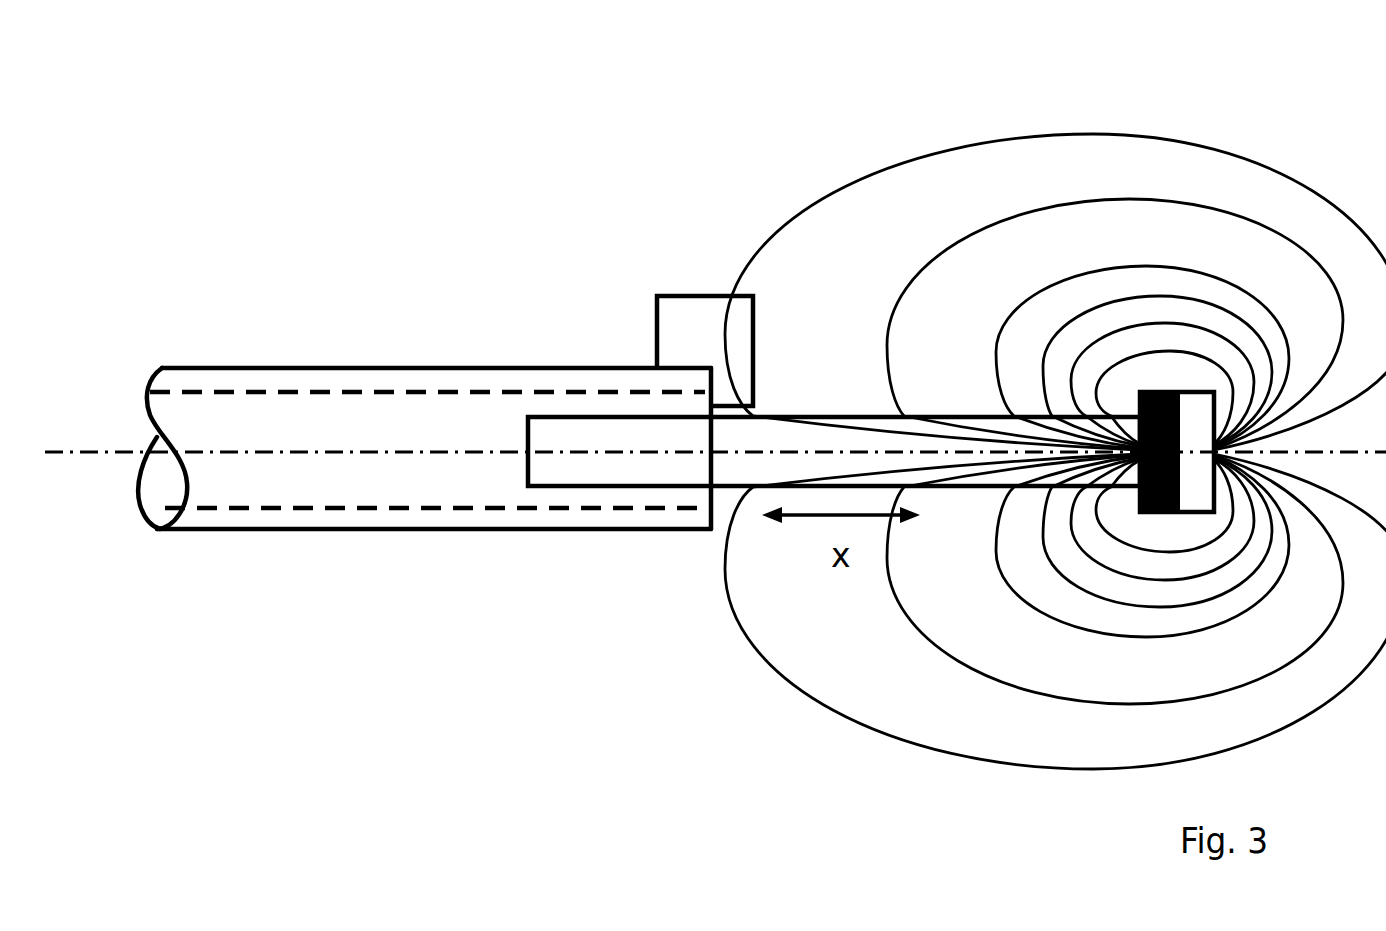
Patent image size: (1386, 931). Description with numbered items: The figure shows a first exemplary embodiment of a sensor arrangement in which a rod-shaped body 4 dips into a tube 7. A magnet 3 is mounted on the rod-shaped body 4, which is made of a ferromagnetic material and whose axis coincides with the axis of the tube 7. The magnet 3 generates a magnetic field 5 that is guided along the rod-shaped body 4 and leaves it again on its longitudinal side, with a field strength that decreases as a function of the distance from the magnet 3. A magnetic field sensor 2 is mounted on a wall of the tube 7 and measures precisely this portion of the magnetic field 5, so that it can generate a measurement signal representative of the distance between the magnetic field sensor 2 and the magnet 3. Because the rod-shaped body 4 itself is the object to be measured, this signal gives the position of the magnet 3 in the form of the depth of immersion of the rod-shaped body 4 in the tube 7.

The magnetic field sensor 2 is at (680, 305).
The magnet 3 is at (1135, 505).
The rod-shaped body 4 is at (748, 465).
The magnetic field 5 is at (1067, 173).
The tube 7 is at (262, 520).